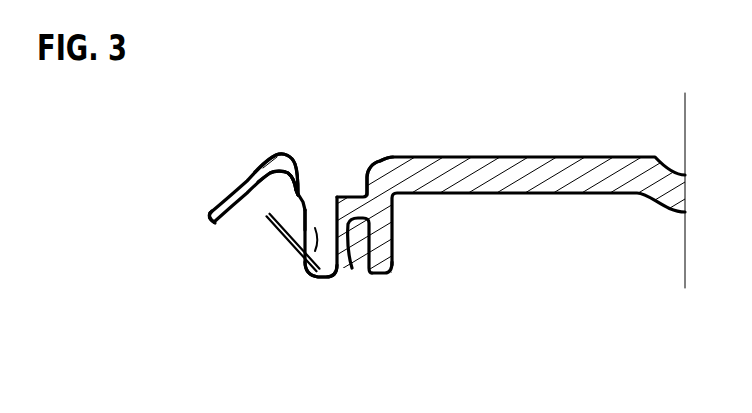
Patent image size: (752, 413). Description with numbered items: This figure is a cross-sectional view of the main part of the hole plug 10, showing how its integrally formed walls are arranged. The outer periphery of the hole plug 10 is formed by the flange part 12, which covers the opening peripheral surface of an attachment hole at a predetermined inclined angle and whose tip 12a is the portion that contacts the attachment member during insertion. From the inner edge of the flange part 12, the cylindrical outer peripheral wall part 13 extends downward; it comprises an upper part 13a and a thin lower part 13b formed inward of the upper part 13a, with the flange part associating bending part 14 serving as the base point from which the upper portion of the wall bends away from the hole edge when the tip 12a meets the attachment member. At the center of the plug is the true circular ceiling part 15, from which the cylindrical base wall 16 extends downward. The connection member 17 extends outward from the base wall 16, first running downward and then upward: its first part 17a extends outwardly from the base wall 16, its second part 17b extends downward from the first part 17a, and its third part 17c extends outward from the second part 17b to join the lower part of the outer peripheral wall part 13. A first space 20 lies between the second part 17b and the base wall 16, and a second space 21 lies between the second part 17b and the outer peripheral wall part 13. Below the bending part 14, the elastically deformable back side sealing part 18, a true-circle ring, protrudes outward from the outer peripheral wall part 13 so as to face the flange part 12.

The hole plug 10 is at (558, 403).
The flange part 12 is at (236, 185).
The tip of the flange part 12a is at (211, 222).
The outer peripheral wall part 13 is at (264, 155).
The upper part of the outer peripheral wall part 13a is at (301, 175).
The lower part of the outer peripheral wall part 13b is at (307, 217).
The flange part associating bending part 14 is at (304, 200).
The ceiling part 15 is at (531, 156).
The base wall 16 is at (393, 268).
The connection member 17 is at (352, 268).
The first part of the connection member 17a is at (377, 158).
The second part of the connection member 17b is at (371, 273).
The third part of the connection member 17c is at (322, 279).
The back side sealing part 18 is at (268, 216).
The first space 20 is at (393, 222).
The second space 21 is at (310, 252).